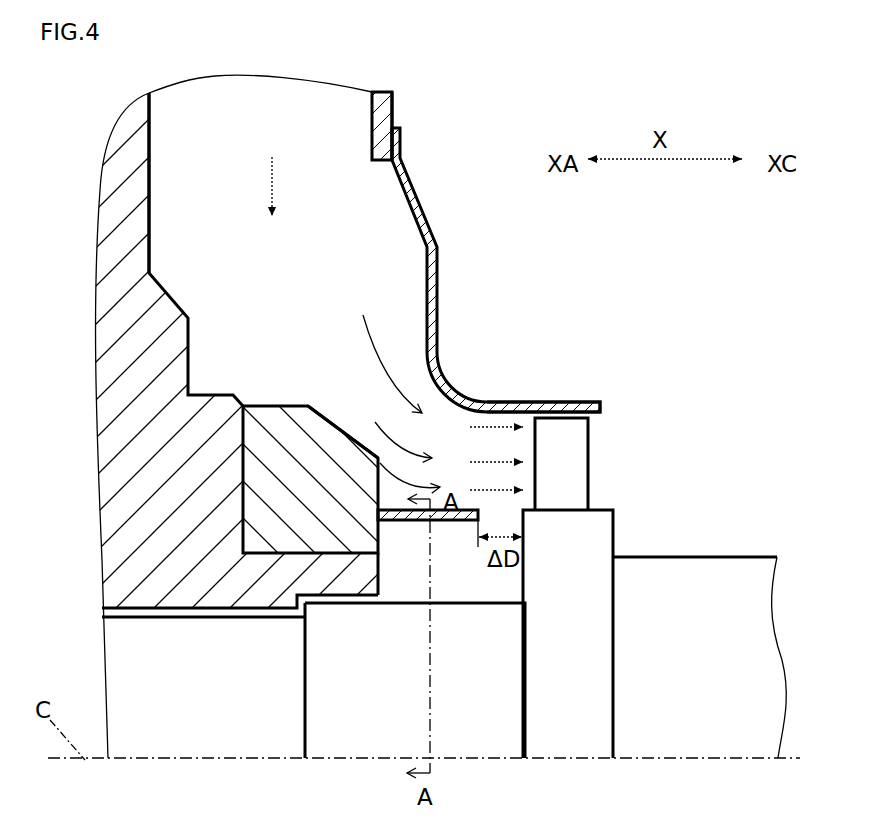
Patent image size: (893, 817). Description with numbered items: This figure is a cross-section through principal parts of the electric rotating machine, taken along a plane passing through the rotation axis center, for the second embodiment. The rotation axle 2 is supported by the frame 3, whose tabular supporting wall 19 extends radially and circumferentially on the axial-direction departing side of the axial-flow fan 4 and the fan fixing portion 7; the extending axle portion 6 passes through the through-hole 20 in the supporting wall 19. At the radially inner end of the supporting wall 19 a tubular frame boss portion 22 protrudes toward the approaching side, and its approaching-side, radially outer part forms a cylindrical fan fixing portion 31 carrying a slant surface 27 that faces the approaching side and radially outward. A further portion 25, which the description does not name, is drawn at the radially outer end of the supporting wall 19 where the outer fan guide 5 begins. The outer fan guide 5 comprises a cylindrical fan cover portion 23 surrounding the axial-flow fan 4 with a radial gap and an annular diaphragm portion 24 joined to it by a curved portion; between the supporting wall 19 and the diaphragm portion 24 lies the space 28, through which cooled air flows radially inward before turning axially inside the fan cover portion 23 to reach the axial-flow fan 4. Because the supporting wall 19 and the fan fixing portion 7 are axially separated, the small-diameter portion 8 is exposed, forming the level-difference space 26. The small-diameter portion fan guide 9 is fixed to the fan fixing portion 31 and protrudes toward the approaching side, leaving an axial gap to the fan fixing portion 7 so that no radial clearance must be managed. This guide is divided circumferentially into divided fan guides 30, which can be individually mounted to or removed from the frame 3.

The rotation axle 2 is at (670, 555).
The frame 3 is at (152, 172).
The axial-flow fan 4 is at (580, 457).
The outer fan guide 5 is at (440, 282).
The extending axle portion 6 is at (699, 621).
The fan fixing portion 7 is at (595, 532).
The small-diameter portion 8 is at (457, 617).
The small-diameter portion fan guide 9 is at (421, 524).
The supporting wall 19 is at (127, 238).
The through-hole 20 is at (85, 658).
The frame boss portion 22 is at (258, 403).
The fan cover portion 23 is at (547, 400).
The diaphragm portion 24 is at (430, 233).
The fixing portion 25 is at (381, 108).
The level-difference space 26 is at (475, 579).
The slant surface 27 is at (340, 428).
The space 28 is at (343, 216).
The divided fan guides 30 is at (400, 521).
The fan fixing portion 31 is at (280, 425).